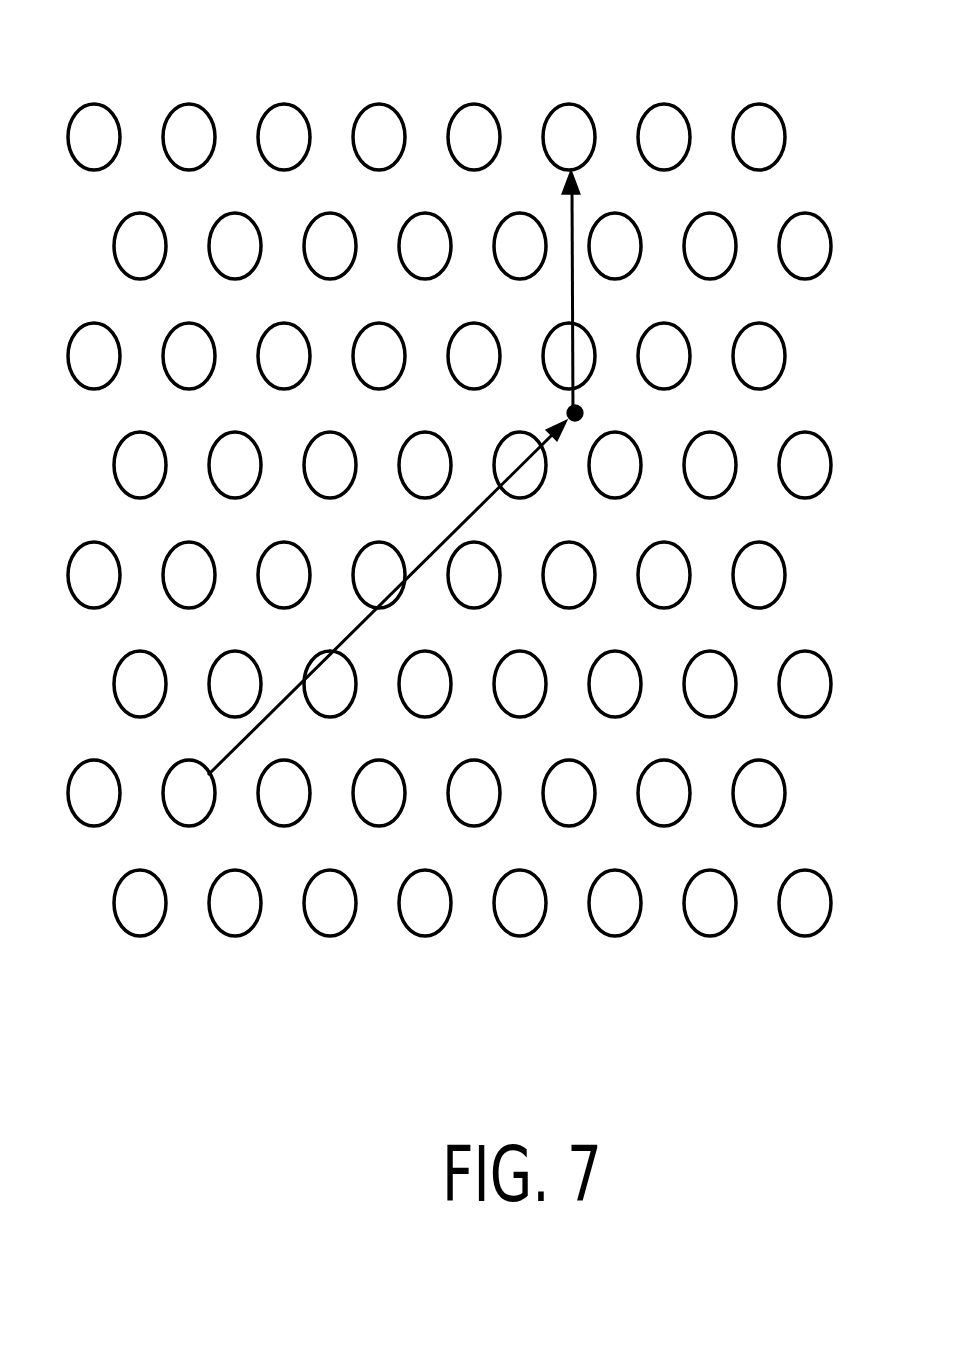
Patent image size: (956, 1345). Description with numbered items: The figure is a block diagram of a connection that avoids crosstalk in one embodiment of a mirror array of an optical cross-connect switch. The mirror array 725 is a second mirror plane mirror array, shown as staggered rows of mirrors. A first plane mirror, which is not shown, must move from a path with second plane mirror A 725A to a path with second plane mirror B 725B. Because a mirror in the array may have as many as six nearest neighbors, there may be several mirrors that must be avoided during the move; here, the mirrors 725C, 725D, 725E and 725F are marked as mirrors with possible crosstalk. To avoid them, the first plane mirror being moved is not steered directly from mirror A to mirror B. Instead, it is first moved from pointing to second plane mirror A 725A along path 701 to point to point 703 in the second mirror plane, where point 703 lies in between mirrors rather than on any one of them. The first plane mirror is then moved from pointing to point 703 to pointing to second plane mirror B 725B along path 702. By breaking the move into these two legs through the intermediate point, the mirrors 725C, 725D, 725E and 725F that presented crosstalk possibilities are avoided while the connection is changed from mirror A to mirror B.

The mirror array 725 is at (634, 44).
The second plane mirror A 725A is at (164, 800).
The second plane mirror B 725B is at (594, 127).
The mirror with possible crosstalk 725C is at (306, 338).
The mirror with possible crosstalk 725D is at (493, 336).
The mirror with possible crosstalk 725E is at (306, 560).
The mirror with possible crosstalk 725F is at (592, 708).
The path 701 is at (283, 702).
The path 702 is at (573, 275).
The point 703 is at (605, 409).